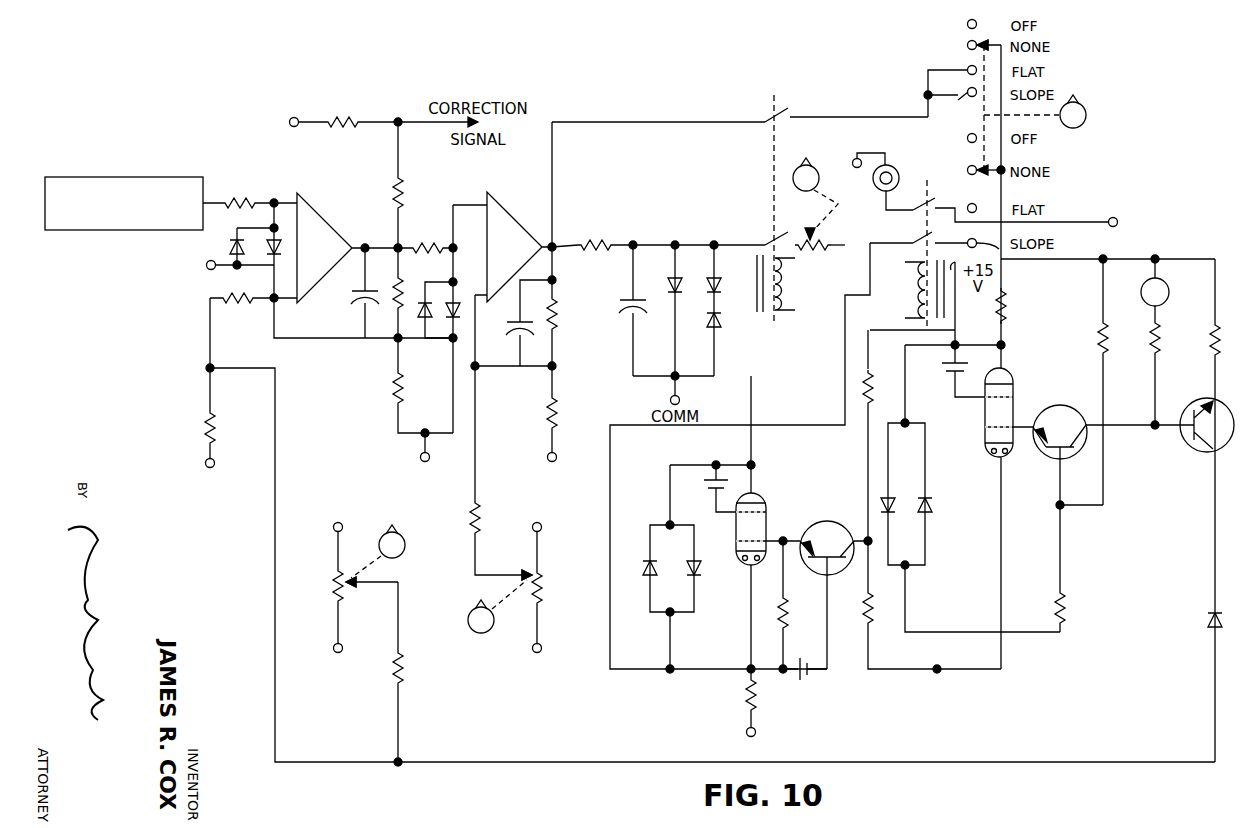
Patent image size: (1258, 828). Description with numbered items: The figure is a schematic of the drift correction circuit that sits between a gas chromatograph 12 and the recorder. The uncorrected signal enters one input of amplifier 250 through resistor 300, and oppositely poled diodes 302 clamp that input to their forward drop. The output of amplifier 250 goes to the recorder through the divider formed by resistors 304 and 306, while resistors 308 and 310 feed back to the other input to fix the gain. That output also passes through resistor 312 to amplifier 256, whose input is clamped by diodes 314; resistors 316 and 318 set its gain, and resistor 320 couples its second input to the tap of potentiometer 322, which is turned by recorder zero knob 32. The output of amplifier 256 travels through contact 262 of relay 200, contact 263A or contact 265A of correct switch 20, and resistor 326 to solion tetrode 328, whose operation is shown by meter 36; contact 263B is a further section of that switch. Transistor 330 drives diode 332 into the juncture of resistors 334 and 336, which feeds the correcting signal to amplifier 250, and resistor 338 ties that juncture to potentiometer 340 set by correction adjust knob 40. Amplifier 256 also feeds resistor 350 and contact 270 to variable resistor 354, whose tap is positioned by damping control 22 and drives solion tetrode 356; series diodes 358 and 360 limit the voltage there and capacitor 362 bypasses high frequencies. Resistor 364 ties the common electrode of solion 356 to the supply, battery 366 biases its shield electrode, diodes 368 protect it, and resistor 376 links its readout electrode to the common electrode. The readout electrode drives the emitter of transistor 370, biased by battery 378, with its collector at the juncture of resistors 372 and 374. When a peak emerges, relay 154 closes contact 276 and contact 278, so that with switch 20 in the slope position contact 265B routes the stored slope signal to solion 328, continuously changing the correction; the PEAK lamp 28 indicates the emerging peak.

The gas chromatograph 12 is at (130, 177).
The correct switch 20 is at (1084, 106).
The damping control 22 is at (812, 160).
The lamp 28 is at (900, 175).
The recorder zero knob 32 is at (492, 630).
The correction meter 36 is at (1170, 292).
The correction adjust knob 40 is at (404, 553).
The relay 154 is at (916, 308).
The relay 200 is at (755, 278).
The amplifier 250 is at (318, 205).
The amplifier 256 is at (508, 205).
The contact 262 is at (775, 105).
The contact 263A is at (956, 66).
The contact 263B is at (977, 204).
The contact 265A is at (963, 104).
The contact 265B is at (1011, 258).
The contact 270 is at (770, 228).
The switch contact 276 is at (908, 222).
The contact 278 is at (938, 183).
The resistor 300 is at (228, 196).
The diodes 302 is at (245, 258).
The resistor 304 is at (403, 185).
The resistor 306 is at (340, 114).
The resistor 308 is at (405, 278).
The resistor 310 is at (405, 388).
The resistor 312 is at (415, 240).
The diodes 314 is at (462, 295).
The resistor 316 is at (558, 320).
The resistor 318 is at (558, 412).
The resistor 320 is at (468, 516).
The potentiometer 322 is at (545, 600).
The resistor 326 is at (1007, 310).
The solion tetrode 328 is at (1016, 378).
The transistor 330 is at (1190, 448).
The diode 332 is at (1208, 626).
The resistor 334 is at (215, 430).
The resistor 336 is at (245, 305).
The resistor 338 is at (405, 668).
The potentiometer 340 is at (330, 580).
The resistor 350 is at (658, 235).
The variable resistor 354 is at (800, 232).
The solion tetrode 356 is at (768, 500).
The diodes 358 is at (668, 278).
The diodes 360 is at (708, 278).
The capacitor 362 is at (625, 318).
The resistor 364 is at (758, 706).
The battery 366 is at (705, 488).
The diodes 368 is at (656, 575).
The transistor 370 is at (815, 522).
The resistor 372 is at (873, 392).
The resistor 374 is at (874, 628).
The resistor 376 is at (790, 612).
The battery 378 is at (808, 680).